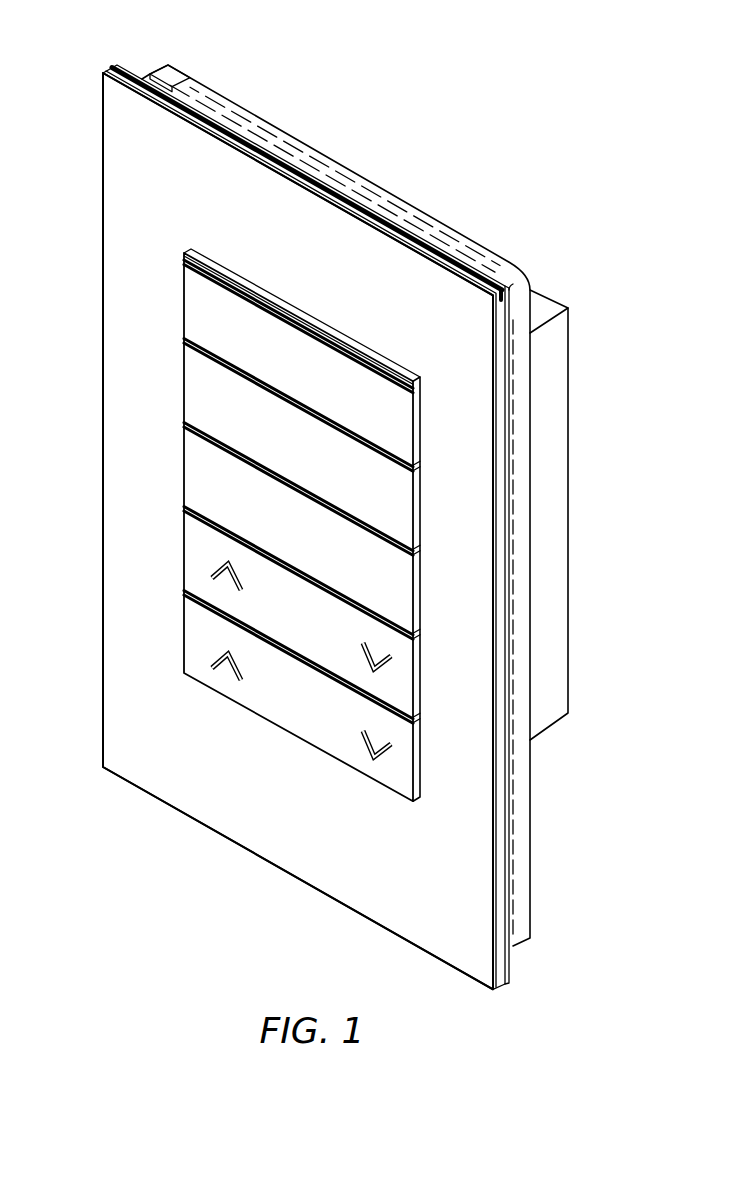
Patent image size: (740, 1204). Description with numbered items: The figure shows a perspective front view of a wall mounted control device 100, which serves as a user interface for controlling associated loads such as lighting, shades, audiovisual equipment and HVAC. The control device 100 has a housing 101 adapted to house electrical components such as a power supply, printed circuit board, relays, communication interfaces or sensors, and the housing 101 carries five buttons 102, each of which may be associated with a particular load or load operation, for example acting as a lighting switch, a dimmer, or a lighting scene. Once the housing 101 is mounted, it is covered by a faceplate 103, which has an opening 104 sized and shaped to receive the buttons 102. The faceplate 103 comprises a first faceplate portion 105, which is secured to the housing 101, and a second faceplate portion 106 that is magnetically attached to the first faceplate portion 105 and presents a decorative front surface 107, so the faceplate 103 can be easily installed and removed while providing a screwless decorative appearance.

The wall mounted control device 100 is at (354, 94).
The housing 101 is at (543, 308).
The buttons 102 is at (303, 340).
The faceplate 103 is at (268, 132).
The opening 104 is at (423, 510).
The first faceplate portion 105 is at (483, 257).
The second faceplate portion 106 is at (402, 257).
The decorative front surface 107 is at (128, 532).